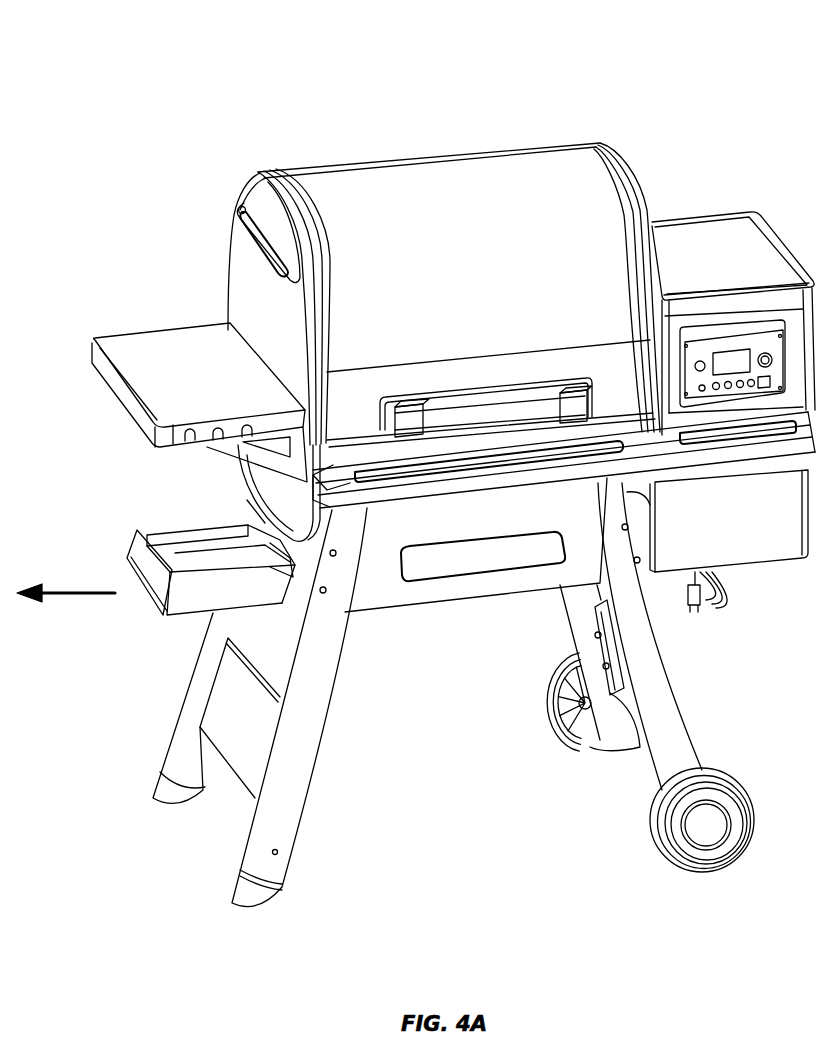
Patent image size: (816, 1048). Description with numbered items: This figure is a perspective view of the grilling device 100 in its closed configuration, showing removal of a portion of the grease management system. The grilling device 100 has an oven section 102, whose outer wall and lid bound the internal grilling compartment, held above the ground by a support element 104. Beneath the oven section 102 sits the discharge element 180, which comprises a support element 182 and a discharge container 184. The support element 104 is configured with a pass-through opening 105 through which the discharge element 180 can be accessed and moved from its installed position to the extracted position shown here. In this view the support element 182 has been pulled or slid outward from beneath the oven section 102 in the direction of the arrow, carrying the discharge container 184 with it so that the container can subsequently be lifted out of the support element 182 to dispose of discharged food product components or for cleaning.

The grilling device 100 is at (220, 60).
The oven section 102 is at (216, 198).
The support element 104 is at (158, 734).
The pass-through opening 105 is at (270, 637).
The discharge element 180 is at (128, 516).
The support element 182 is at (127, 556).
The discharge container 184 is at (200, 600).